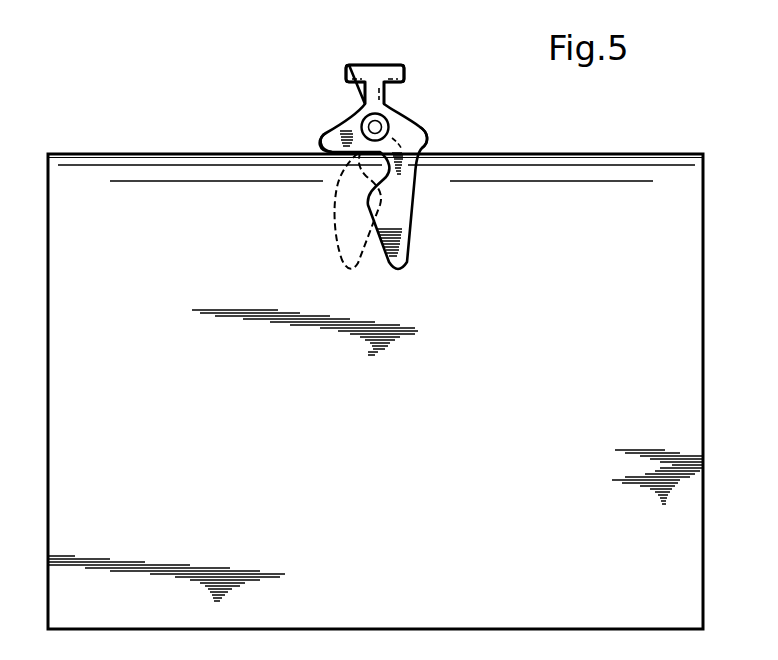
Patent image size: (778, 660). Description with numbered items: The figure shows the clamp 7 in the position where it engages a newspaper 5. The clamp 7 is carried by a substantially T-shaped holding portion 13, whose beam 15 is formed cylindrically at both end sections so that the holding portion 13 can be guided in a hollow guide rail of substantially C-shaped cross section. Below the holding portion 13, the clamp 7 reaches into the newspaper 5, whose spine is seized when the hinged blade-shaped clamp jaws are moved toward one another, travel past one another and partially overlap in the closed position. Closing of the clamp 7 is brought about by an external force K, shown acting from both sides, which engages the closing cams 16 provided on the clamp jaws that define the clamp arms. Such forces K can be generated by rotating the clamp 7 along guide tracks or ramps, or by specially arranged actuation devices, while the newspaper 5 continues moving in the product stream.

The newspaper 5 is at (638, 170).
The clamp 7 is at (329, 107).
The holding portion 13 is at (379, 58).
The beam 15 is at (405, 72).
The closing cams 16 is at (328, 133).
The external force K is at (312, 134).